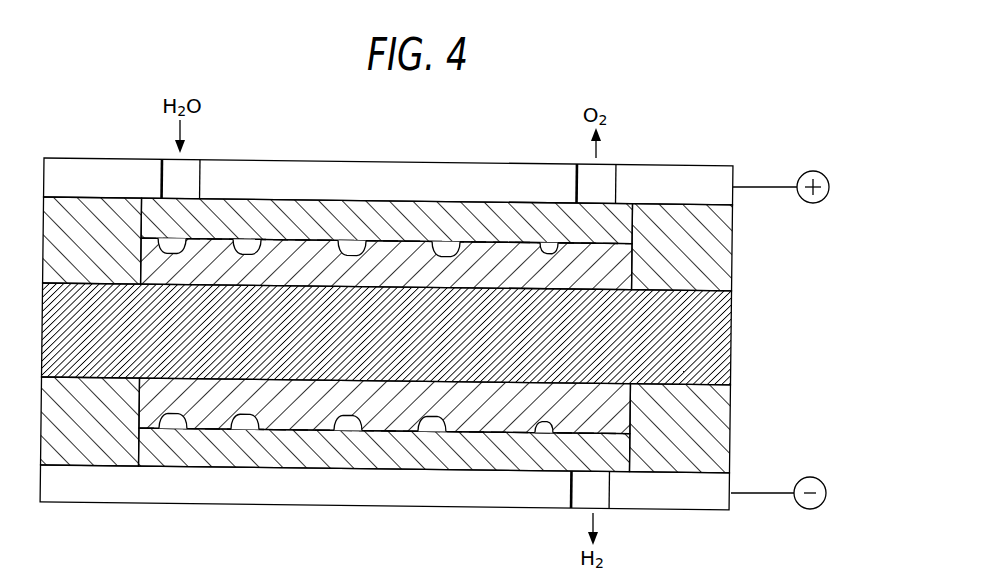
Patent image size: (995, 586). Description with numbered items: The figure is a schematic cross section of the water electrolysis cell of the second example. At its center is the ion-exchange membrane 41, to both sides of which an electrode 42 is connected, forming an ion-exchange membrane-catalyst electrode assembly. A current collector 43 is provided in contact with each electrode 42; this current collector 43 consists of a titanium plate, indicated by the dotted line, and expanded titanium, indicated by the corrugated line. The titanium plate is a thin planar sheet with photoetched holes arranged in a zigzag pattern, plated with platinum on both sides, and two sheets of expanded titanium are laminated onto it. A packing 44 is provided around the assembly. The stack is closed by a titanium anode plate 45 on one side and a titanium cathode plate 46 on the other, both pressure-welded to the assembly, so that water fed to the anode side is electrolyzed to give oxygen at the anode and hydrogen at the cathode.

The ion-exchange membrane 41 is at (720, 328).
The electrode 42 is at (617, 275).
The current collector 43 is at (618, 221).
The packing 44 is at (720, 435).
The titanium anode plate 45 is at (676, 175).
The titanium cathode plate 46 is at (673, 500).